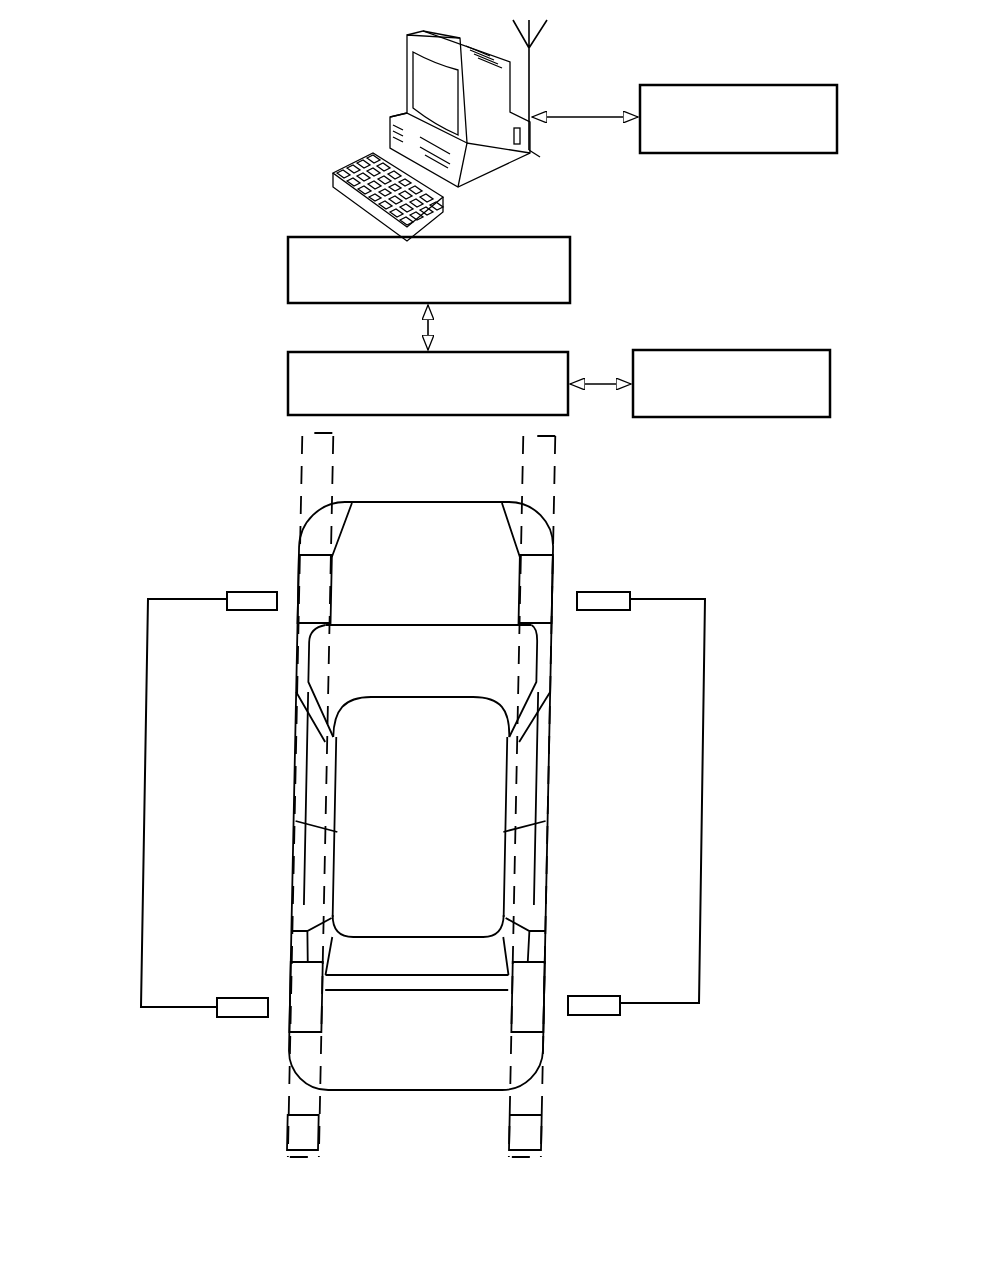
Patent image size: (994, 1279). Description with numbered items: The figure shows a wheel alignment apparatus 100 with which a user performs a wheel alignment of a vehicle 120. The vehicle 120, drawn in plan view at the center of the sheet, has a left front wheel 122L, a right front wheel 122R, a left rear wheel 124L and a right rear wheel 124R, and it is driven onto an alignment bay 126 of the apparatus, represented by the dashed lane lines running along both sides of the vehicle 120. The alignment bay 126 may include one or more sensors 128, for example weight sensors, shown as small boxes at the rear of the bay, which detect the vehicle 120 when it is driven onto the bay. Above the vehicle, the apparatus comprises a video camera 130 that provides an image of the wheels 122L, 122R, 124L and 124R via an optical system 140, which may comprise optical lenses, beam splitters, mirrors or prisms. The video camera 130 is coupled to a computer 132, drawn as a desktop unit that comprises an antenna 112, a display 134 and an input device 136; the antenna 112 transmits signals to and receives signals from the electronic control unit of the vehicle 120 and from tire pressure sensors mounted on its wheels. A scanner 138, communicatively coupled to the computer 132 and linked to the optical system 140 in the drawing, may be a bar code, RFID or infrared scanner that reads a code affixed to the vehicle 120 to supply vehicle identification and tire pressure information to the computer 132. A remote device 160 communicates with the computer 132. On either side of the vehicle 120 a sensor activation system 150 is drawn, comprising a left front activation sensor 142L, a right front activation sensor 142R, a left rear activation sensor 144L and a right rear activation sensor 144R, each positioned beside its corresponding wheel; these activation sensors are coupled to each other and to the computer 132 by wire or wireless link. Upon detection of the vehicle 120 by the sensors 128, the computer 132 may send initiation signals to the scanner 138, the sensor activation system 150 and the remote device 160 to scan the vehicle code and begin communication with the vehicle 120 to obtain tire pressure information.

The wheel alignment apparatus 100 is at (104, 89).
The antenna 112 is at (537, 70).
The vehicle 120 is at (556, 802).
The left front wheel 122L is at (296, 589).
The right front wheel 122R is at (558, 588).
The left rear wheel 124L is at (289, 1001).
The right rear wheel 124R is at (549, 993).
The alignment bay 126 is at (559, 490).
The sensors 128 is at (300, 1131).
The video camera 130 is at (429, 270).
The computer 132 is at (541, 157).
The display 134 is at (403, 76).
The input device 136 is at (362, 155).
The scanner 138 is at (731, 383).
The optical system 140 is at (428, 383).
The left front activation sensor 142L is at (232, 587).
The right front activation sensor 142R is at (622, 588).
The left rear activation sensor 144L is at (221, 992).
The right rear activation sensor 144R is at (614, 992).
The sensor activation system 150 is at (147, 770).
The remote device 160 is at (738, 119).